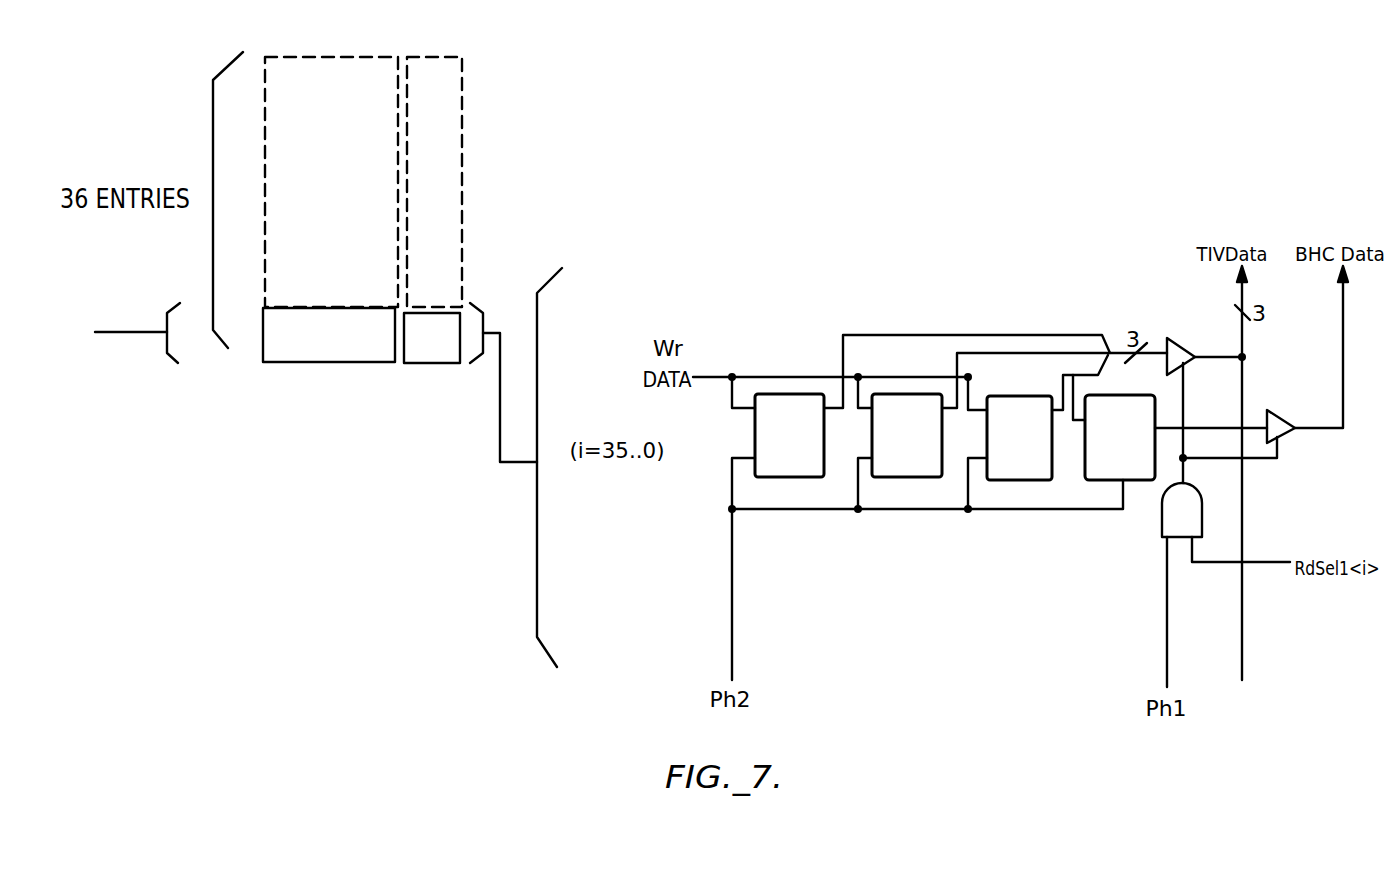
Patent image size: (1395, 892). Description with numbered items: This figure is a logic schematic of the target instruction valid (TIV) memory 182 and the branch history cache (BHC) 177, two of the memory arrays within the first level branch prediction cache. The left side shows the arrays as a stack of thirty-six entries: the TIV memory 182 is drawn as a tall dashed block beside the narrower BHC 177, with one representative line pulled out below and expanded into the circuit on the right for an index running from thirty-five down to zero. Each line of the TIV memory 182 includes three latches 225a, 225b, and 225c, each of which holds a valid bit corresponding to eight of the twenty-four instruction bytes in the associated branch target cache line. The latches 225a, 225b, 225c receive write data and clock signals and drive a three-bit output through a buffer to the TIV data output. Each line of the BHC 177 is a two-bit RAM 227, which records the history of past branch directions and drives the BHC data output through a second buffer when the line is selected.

The target instruction valid (TIV) memory 182 is at (339, 56).
The branch history cache (BHC) 177 is at (432, 56).
The latch 225a is at (772, 480).
The latch 225b is at (889, 480).
The latch 225c is at (1005, 483).
The 2-bit RAM 227 is at (1104, 483).